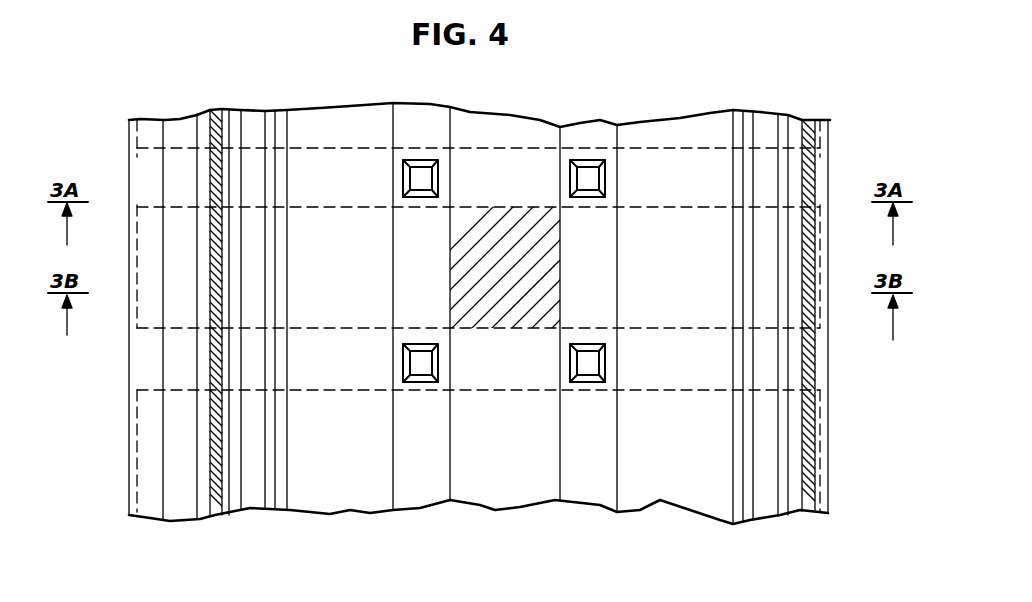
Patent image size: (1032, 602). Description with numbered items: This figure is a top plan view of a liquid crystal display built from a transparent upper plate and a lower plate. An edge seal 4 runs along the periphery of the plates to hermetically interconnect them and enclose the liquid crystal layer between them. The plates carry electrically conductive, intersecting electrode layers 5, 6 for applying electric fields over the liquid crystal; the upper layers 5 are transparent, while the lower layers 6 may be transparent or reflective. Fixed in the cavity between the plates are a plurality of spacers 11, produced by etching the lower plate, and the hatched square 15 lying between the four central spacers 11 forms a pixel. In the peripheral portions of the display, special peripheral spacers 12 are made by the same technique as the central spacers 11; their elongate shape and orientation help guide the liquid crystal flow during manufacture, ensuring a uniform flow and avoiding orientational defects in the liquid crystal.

The edge seal 4 is at (212, 140).
The upper electrode layers 5 is at (130, 132).
The lower electrode layers 6 is at (470, 480).
The spacers 11 is at (575, 176).
The peripheral spacers 12 is at (249, 132).
The hatched square 15 is at (497, 228).